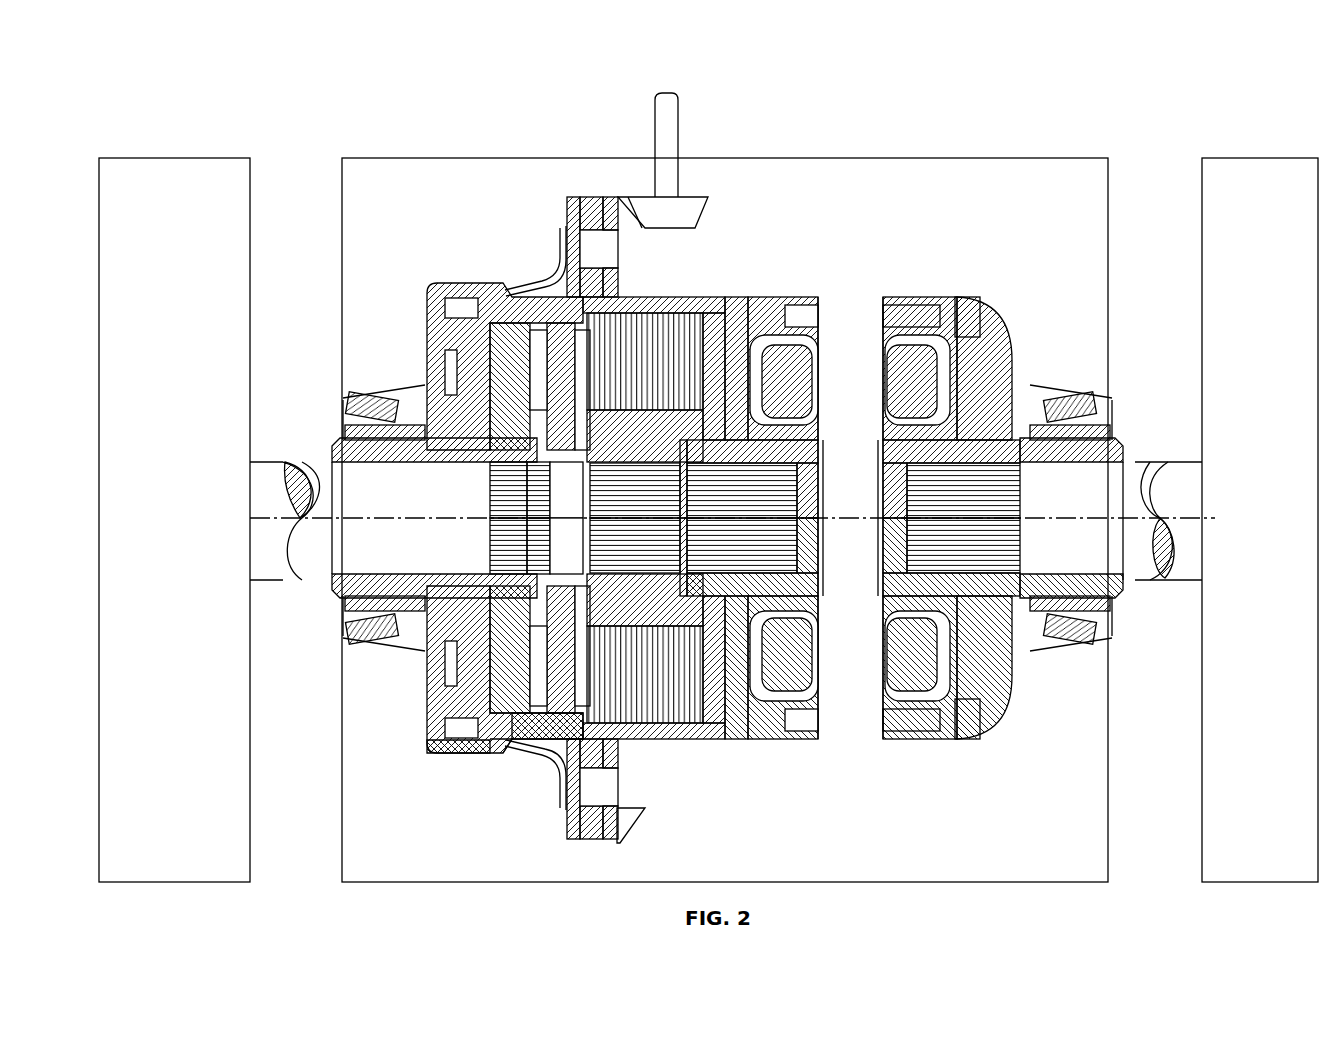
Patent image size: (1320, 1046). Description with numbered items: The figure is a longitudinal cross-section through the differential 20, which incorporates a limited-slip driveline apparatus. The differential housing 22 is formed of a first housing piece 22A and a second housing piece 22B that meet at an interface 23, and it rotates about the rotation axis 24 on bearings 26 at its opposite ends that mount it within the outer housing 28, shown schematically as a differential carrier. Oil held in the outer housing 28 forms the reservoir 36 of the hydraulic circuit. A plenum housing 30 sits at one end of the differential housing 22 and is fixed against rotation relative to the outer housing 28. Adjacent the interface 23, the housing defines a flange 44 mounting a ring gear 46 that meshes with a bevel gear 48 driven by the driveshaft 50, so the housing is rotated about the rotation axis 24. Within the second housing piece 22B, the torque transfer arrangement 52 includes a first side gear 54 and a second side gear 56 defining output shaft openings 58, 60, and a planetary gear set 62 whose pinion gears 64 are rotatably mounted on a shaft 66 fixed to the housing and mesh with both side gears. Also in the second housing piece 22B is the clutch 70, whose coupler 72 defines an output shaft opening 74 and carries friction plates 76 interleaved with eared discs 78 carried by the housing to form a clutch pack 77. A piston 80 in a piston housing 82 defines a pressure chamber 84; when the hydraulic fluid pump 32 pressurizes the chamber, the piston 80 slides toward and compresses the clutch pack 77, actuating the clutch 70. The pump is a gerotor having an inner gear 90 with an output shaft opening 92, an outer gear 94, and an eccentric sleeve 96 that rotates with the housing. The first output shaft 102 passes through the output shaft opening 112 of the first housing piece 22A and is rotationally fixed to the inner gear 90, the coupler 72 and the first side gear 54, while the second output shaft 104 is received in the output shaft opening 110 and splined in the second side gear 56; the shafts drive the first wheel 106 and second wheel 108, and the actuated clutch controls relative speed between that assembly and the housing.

The differential 20 is at (792, 255).
The differential housing 22 is at (958, 297).
The first housing piece 22A is at (583, 745).
The second housing piece 22B is at (1010, 324).
The interface 23 is at (572, 197).
The rotation axis 24 is at (1126, 518).
The bearings 26 is at (385, 390).
The outer housing 28 is at (976, 158).
The plenum housing 30 is at (426, 742).
The hydraulic fluid pump 32 is at (525, 724).
The reservoir 36 is at (890, 837).
The flange 44 is at (598, 197).
The ring gear 46 is at (615, 197).
The bevel gear 48 is at (706, 208).
The driveshaft 50 is at (680, 128).
The torque transfer arrangement 52 is at (855, 290).
The first side gear 54 is at (718, 742).
The second side gear 56 is at (958, 692).
The output shaft opening 58 is at (770, 566).
The output shaft opening 60 is at (950, 568).
The planetary gear set 62 is at (907, 705).
The pinion gears 64 is at (765, 345).
The shaft 66 is at (870, 300).
The clutch 70 is at (668, 740).
The coupler 72 is at (727, 300).
The output shaft opening 74 is at (700, 603).
The friction plates 76 is at (632, 737).
The clutch pack 77 is at (668, 310).
The eared discs 78 is at (578, 750).
The piston 80 is at (563, 317).
The piston housing 82 is at (582, 335).
The pressure chamber 84 is at (510, 345).
The inner gear 90 is at (505, 605).
The output shaft opening 92 is at (490, 546).
The outer gear 94 is at (490, 688).
The eccentric sleeve 96 is at (497, 738).
The first output shaft 102 is at (293, 462).
The second output shaft 104 is at (1186, 582).
The first wheel 106 is at (178, 158).
The second wheel 108 is at (1272, 158).
The output shaft opening 110 is at (1083, 463).
The output shaft opening 112 is at (376, 463).